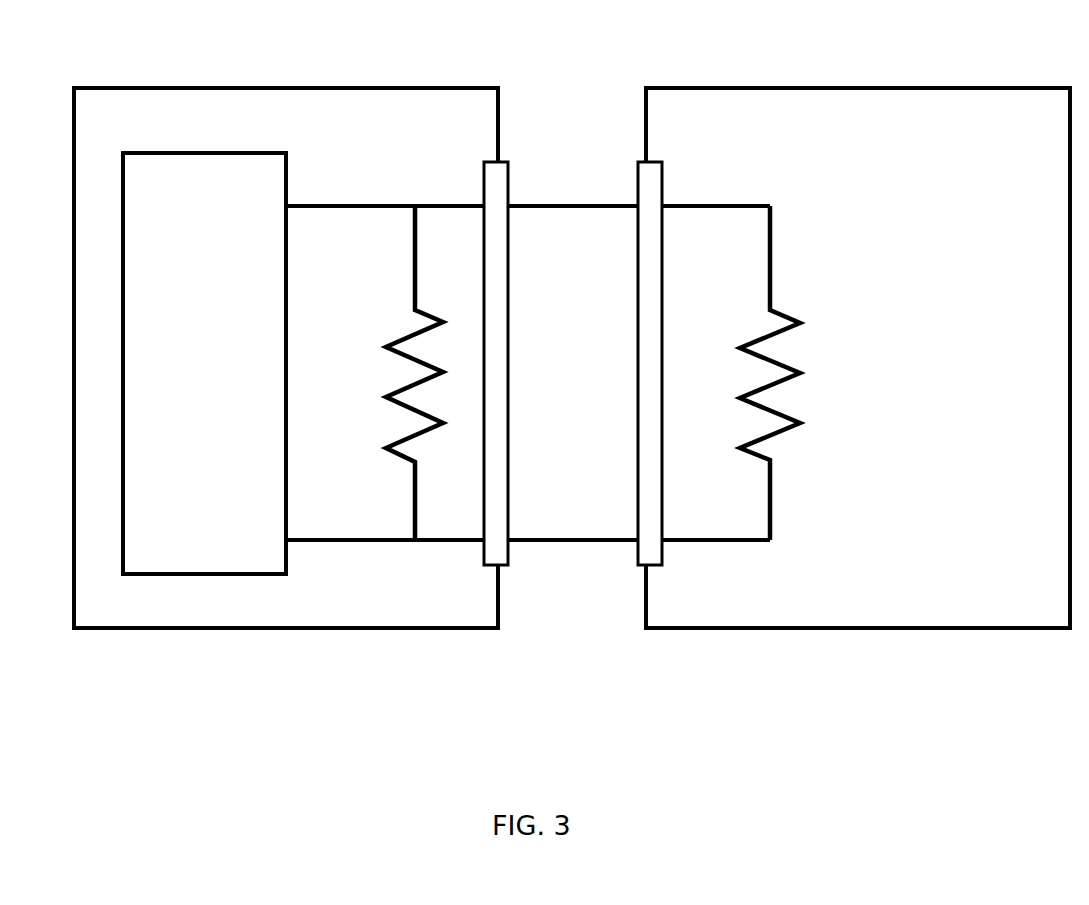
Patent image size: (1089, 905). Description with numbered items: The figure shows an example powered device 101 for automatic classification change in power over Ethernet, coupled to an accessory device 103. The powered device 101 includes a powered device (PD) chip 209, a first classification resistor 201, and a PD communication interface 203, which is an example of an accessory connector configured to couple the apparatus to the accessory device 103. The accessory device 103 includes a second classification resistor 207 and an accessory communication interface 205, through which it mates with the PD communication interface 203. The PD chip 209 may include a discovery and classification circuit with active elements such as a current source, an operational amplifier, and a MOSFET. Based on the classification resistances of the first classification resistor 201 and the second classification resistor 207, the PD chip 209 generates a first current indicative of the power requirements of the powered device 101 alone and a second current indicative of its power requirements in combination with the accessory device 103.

The powered device 101 is at (170, 87).
The accessory device 103 is at (741, 88).
The first classification resistor 201 is at (385, 347).
The PD communication interface 203 is at (510, 176).
The accessory communication interface 205 is at (664, 175).
The second classification resistor 207 is at (800, 323).
The powered device (PD) chip 209 is at (226, 409).